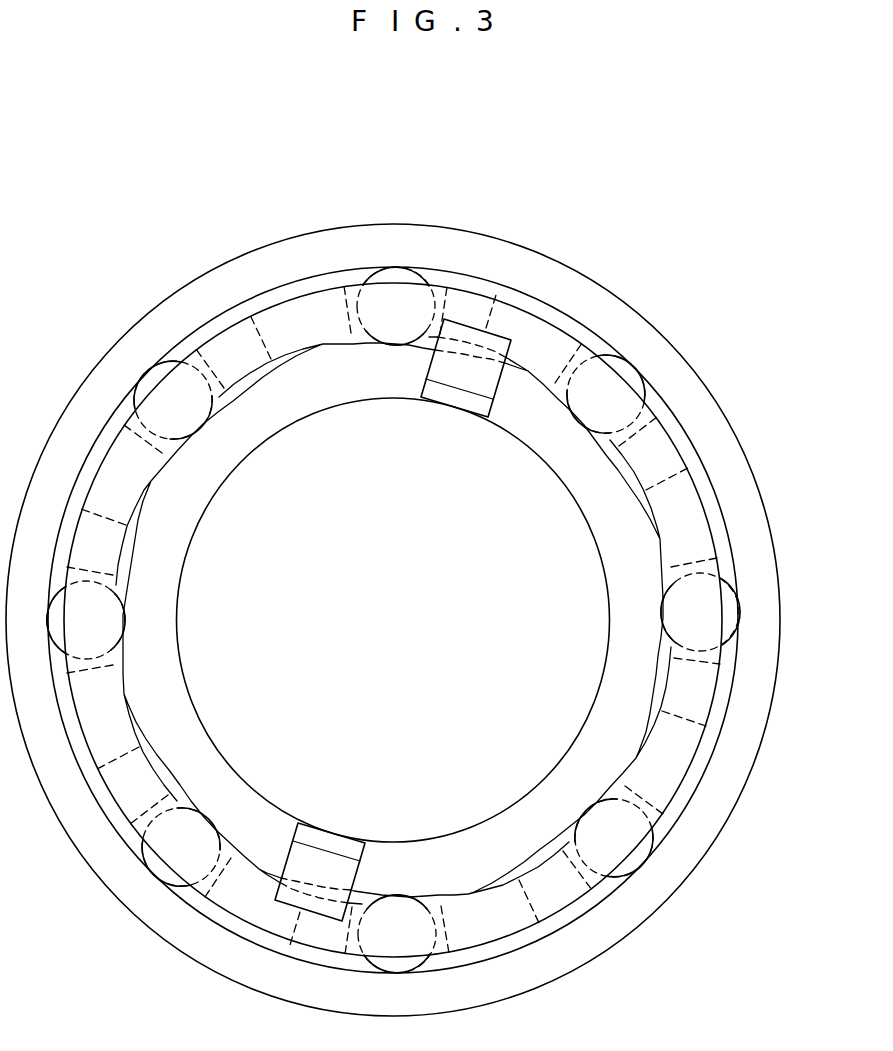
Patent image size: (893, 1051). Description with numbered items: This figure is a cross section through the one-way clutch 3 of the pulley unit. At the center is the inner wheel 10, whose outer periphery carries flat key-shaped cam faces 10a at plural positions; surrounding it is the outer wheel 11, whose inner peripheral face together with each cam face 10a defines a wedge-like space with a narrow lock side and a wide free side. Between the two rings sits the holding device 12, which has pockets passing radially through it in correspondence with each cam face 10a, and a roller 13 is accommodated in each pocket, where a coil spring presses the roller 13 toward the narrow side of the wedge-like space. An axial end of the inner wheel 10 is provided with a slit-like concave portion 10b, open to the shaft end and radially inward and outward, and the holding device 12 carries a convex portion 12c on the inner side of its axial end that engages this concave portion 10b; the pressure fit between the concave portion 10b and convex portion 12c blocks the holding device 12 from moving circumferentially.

The one-way clutch 3 is at (670, 312).
The inner wheel 10 is at (545, 527).
The cam face 10a is at (126, 556).
The concave portion 10b is at (481, 406).
The outer wheel 11 is at (566, 285).
The holding device 12 is at (466, 292).
The convex portion 12c is at (452, 374).
The roller 13 is at (383, 268).